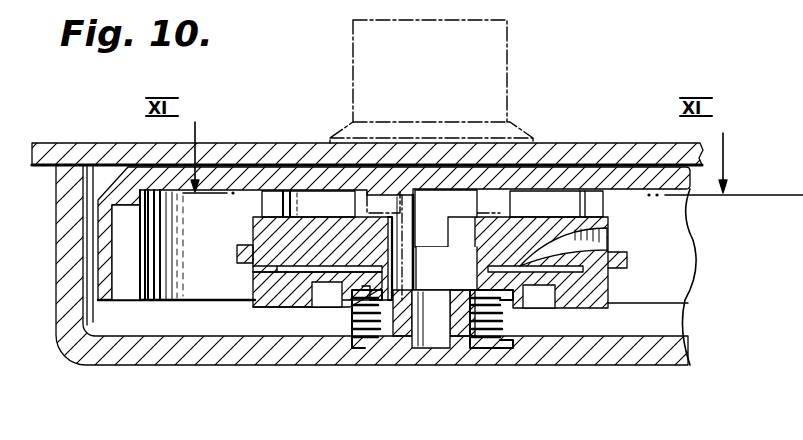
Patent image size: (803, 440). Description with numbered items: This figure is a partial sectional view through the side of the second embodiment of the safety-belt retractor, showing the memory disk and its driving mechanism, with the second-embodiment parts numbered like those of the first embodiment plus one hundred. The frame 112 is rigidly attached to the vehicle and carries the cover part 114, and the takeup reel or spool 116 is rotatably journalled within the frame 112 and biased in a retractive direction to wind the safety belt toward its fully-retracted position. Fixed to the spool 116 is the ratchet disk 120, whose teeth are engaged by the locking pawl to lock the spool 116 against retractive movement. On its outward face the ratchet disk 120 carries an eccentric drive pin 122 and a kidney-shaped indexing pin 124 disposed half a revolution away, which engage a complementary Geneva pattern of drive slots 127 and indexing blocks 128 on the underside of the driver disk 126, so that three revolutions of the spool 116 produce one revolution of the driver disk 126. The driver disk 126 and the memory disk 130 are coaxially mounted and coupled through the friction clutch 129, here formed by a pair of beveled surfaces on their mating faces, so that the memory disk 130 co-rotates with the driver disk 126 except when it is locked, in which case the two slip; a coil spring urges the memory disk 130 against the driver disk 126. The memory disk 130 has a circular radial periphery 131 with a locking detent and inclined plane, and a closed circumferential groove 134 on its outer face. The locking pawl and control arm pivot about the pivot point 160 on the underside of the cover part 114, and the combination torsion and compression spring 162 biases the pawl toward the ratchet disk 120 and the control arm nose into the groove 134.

The frame 112 is at (102, 150).
The cover part 114 is at (598, 352).
The takeup reel or spool 116 is at (507, 31).
The ratchet disk 120 is at (123, 236).
The drive pin 122 is at (403, 187).
The indexing pin 124 is at (460, 197).
The driver disk 126 is at (322, 230).
The drive slots 127 is at (431, 248).
The indexing blocks 128 is at (288, 192).
The friction clutch 129 is at (607, 273).
The memory disk 130 is at (265, 300).
The circular radial periphery 131 is at (253, 281).
The circumferential groove 134 is at (318, 306).
The pivot point 160 is at (455, 346).
The combination torsion and compression spring 162 is at (352, 318).